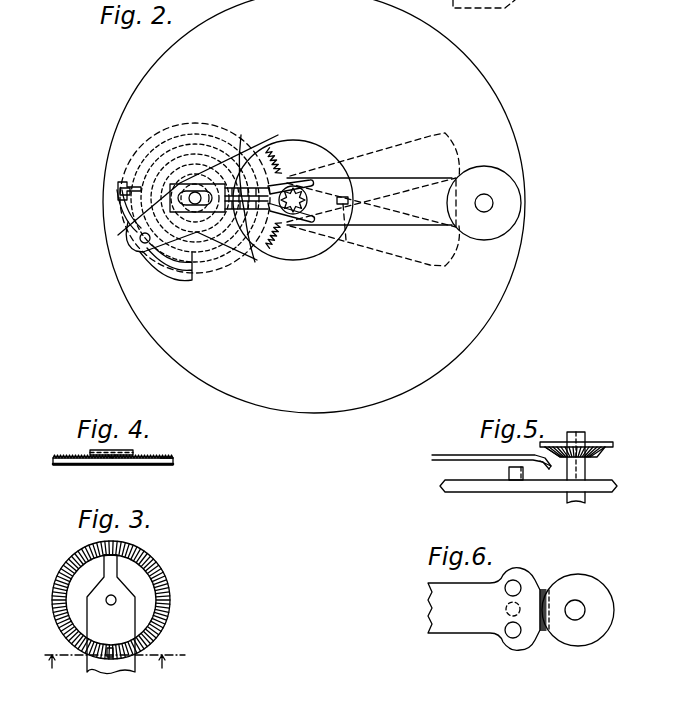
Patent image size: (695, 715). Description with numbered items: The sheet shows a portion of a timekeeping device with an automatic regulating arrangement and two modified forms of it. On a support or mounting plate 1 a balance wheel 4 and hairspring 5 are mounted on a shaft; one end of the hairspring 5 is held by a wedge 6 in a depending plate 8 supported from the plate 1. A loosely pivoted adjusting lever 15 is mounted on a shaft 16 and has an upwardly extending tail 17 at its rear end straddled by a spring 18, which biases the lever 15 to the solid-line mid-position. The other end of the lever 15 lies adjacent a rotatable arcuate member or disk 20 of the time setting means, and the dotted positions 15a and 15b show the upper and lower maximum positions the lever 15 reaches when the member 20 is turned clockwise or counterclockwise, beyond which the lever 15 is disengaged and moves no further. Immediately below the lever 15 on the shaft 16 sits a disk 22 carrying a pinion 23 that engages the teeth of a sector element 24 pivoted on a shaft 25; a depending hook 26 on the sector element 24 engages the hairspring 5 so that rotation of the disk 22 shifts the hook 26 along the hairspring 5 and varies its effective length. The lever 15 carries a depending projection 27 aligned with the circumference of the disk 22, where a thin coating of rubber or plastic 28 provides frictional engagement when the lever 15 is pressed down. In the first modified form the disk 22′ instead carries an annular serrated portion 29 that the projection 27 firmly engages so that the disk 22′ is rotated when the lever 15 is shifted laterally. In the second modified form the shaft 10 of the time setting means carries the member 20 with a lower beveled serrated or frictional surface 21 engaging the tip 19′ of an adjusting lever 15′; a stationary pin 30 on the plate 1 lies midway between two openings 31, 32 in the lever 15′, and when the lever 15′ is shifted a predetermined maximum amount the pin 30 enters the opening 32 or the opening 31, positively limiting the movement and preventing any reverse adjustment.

In FIG. 2, the support or mounting plate 1 is at (512, 130).
In FIG. 5, the support or mounting plate 1 is at (612, 486).
In FIG. 2, the balance wheel 4 is at (140, 145).
In FIG. 3, the balance wheel 4 is at (114, 674).
In FIG. 2, the hairspring 5 is at (203, 140).
In FIG. 2, the wedge 6 is at (120, 196).
In FIG. 2, the depending plate 8 is at (118, 184).
In FIG. 2, the shaft 10 is at (491, 198).
In FIG. 5, the shaft 10 is at (582, 497).
In FIG. 6, the shaft 10 is at (583, 604).
In FIG. 2, the adjusting lever 15 is at (432, 172).
In FIG. 4, the adjusting lever 15 is at (133, 452).
In FIG. 3, the adjusting lever 15 is at (135, 608).
In FIG. 2, the upper dotted line position of adjusting lever 15a is at (432, 135).
In FIG. 2, the lower dotted line position of adjusting lever 15b is at (428, 263).
In FIG. 5, the adjusting lever 15′ is at (452, 454).
In FIG. 6, the adjusting lever 15′ is at (464, 656).
In FIG. 3, the shaft 16 is at (116, 598).
In FIG. 2, the tail 17 is at (256, 249).
In FIG. 3, the tail 17 is at (118, 555).
In FIG. 2, the spring 18 is at (241, 135).
In FIG. 5, the tip of adjusting lever 19′ is at (538, 458).
In FIG. 6, the tip of adjusting lever 19′ is at (546, 588).
In FIG. 2, the rotatable arcuate member or disk 20 is at (514, 205).
In FIG. 5, the rotatable arcuate member or disk 20 is at (648, 448).
In FIG. 6, the rotatable arcuate member or disk 20 is at (642, 626).
In FIG. 5, the beveled serrated or frictional surface 21 is at (598, 452).
In FIG. 2, the disk 22 is at (318, 143).
In FIG. 4, the disk 22′ is at (53, 461).
In FIG. 3, the disk 22′ is at (52, 600).
In FIG. 2, the pinion 23 is at (285, 228).
In FIG. 2, the sector element 24 is at (140, 252).
In FIG. 2, the shaft 25 is at (195, 192).
In FIG. 2, the depending hook 26 is at (140, 238).
In FIG. 2, the depending projection 27 is at (345, 228).
In FIG. 4, the depending projection 27 is at (92, 452).
In FIG. 3, the depending projection 27 is at (112, 657).
In FIG. 2, the coating of rubber or plastic 28 is at (283, 148).
In FIG. 4, the annular serrated portion 29 is at (165, 458).
In FIG. 3, the annular serrated portion 29 is at (68, 565).
In FIG. 5, the stationary pin 30 is at (509, 472).
In FIG. 6, the stationary pin 30 is at (506, 609).
In FIG. 6, the opening 31 is at (516, 581).
In FIG. 6, the opening 32 is at (513, 638).